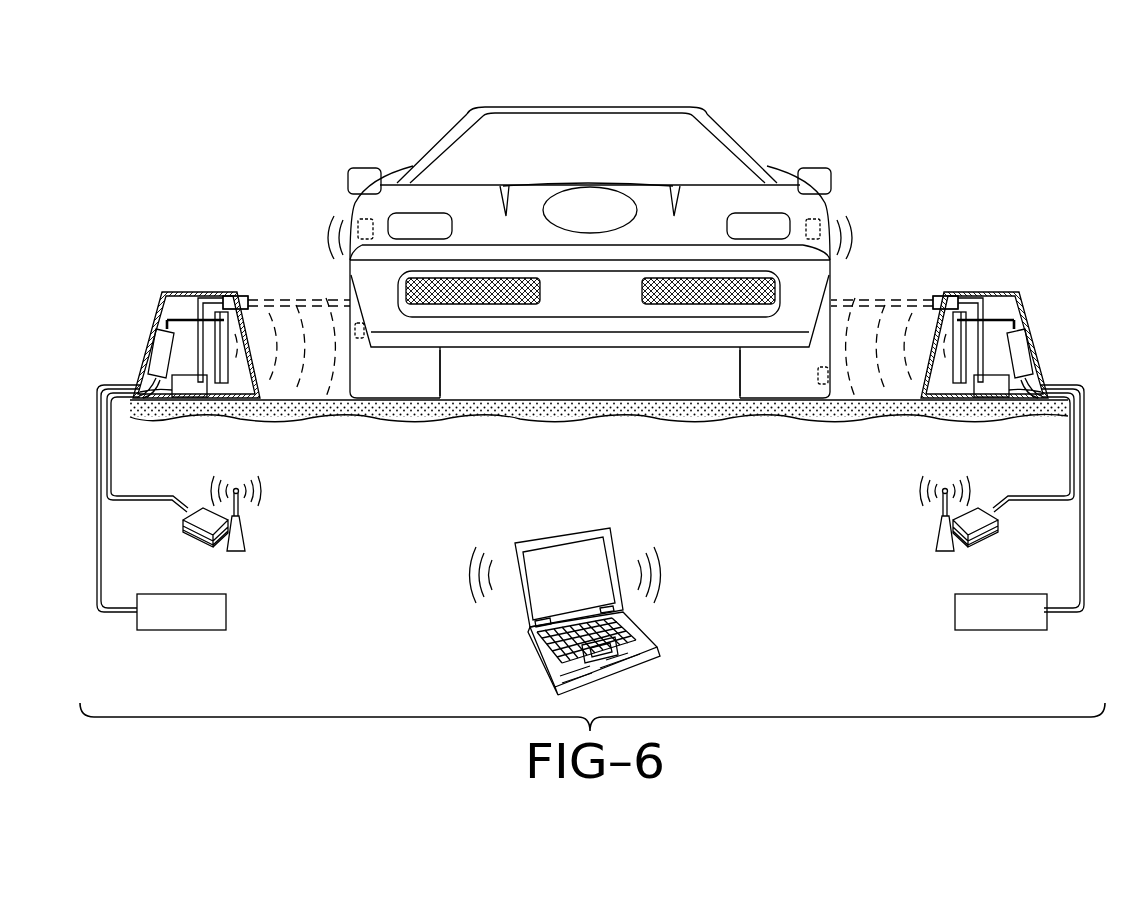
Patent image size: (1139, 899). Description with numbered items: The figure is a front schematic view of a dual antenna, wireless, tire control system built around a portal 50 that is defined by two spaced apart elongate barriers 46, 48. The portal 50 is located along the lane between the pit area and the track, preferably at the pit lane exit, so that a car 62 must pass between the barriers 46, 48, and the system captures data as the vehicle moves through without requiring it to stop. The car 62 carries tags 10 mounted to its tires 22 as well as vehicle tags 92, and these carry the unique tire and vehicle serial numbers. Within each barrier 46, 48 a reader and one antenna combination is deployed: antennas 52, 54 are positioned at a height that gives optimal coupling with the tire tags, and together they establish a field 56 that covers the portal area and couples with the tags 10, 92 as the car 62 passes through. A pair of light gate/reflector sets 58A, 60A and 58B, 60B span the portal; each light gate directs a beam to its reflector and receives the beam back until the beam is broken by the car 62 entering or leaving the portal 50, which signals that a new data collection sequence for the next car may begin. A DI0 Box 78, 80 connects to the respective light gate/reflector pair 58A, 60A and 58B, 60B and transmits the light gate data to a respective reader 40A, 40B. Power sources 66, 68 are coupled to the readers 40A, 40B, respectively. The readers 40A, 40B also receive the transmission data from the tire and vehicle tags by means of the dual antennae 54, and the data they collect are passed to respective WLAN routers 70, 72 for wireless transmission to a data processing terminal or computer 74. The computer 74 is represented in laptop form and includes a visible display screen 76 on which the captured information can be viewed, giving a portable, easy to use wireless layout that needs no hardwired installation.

The tag 10 is at (360, 339).
The tire 22 is at (422, 376).
The reader 40A is at (160, 347).
The reader 40B is at (1021, 347).
The barrier 46 is at (177, 291).
The barrier 48 is at (1003, 291).
The portal 50 is at (292, 140).
The antenna 52 is at (590, 280).
The antenna 54 is at (226, 366).
The field 56 is at (293, 392).
The light gate 58A is at (240, 296).
The light gate 58B is at (938, 296).
The reflector 60A is at (248, 254).
The reflector 60B is at (945, 302).
The car 62 is at (571, 106).
The power source 66 is at (210, 630).
The power source 68 is at (1022, 630).
The WLAN router 70 is at (247, 535).
The WLAN router 72 is at (938, 535).
The computer 74 is at (546, 667).
The display screen 76 is at (597, 562).
The DI0 Box 78 is at (192, 396).
The DI0 Box 80 is at (990, 396).
The tag 92 is at (364, 218).